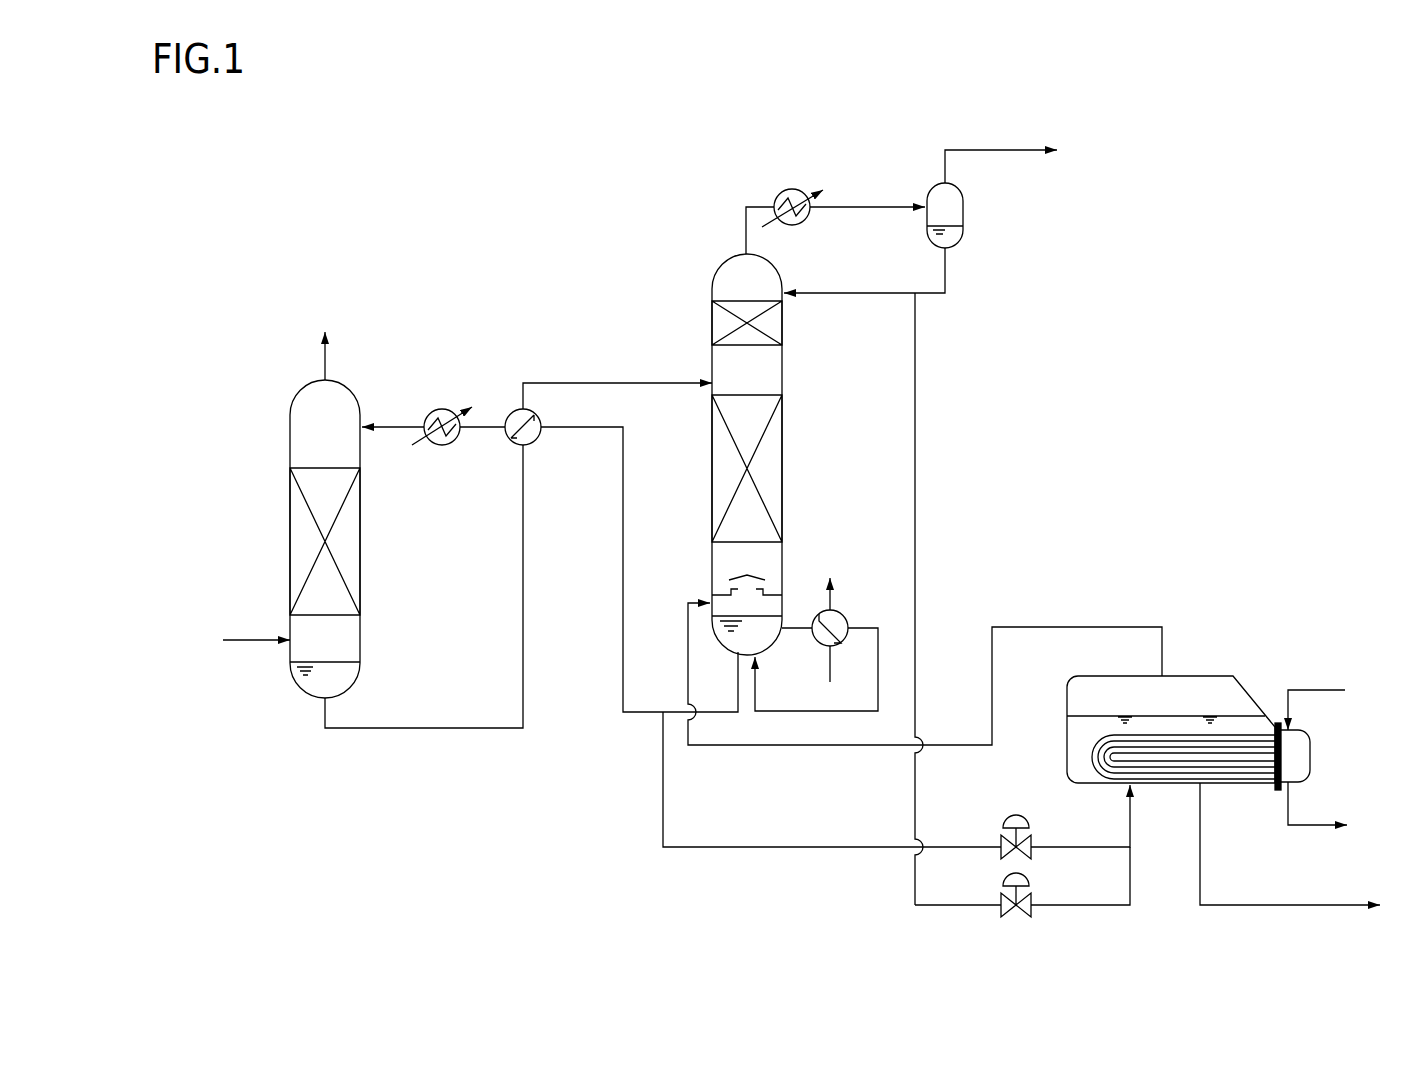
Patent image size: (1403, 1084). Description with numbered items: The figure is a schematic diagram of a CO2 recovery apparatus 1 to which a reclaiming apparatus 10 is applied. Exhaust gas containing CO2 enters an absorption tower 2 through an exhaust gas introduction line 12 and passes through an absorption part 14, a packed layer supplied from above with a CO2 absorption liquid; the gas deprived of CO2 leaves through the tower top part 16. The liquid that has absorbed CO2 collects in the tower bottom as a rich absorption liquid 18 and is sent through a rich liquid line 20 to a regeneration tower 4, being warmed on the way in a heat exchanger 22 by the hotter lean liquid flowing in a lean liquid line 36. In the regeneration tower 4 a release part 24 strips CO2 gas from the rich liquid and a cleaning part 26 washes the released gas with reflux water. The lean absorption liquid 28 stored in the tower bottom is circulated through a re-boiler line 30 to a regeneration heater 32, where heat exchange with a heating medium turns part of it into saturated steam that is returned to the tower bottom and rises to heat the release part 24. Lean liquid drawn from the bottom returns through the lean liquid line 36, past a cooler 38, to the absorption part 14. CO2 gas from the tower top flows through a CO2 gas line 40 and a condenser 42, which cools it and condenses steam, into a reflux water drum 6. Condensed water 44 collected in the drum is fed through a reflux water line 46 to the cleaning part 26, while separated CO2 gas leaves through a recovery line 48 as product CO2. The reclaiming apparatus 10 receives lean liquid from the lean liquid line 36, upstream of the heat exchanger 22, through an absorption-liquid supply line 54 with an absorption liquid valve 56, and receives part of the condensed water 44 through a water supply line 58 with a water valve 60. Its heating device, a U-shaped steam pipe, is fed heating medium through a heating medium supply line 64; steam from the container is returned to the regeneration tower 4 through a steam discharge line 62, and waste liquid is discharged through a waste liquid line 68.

The CO2 recovery apparatus 1 is at (1338, 120).
The absorption tower 2 is at (345, 385).
The regeneration tower 4 is at (727, 262).
The reflux water drum 6 is at (963, 200).
The reclaiming apparatus 10 is at (1268, 666).
The exhaust gas introduction line 12 is at (247, 646).
The absorption part 14 is at (300, 540).
The tower top part 16 is at (321, 360).
The rich absorption liquid 18 is at (345, 680).
The rich liquid line 20 is at (432, 732).
The heat exchanger 22 is at (540, 446).
The release part 24 is at (722, 470).
The cleaning part 26 is at (722, 325).
The lean absorption liquid 28 is at (763, 637).
The re-boiler line 30 is at (878, 657).
The regeneration heater 32 is at (838, 610).
The lean liquid line 36 is at (624, 573).
The cooler 38 is at (445, 408).
The CO2 gas line 40 is at (745, 215).
The condenser 42 is at (797, 190).
The condensed water 44 is at (952, 238).
The reflux water line 46 is at (848, 300).
The recovery line 48 is at (1010, 150).
The absorption-liquid supply line 54 is at (960, 847).
The absorption liquid valve 56 is at (1028, 818).
The water supply line 58 is at (960, 905).
The water valve 60 is at (1030, 883).
The steam discharge line 62 is at (1060, 627).
The heating medium supply line 64 is at (1328, 690).
The waste liquid line 68 is at (1252, 905).